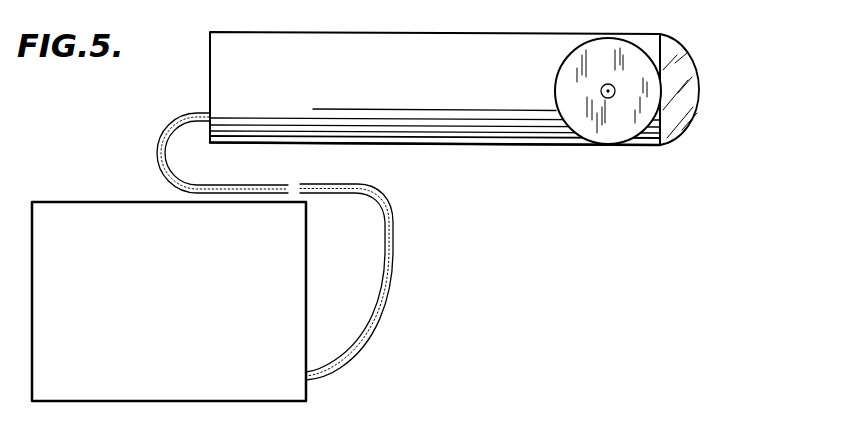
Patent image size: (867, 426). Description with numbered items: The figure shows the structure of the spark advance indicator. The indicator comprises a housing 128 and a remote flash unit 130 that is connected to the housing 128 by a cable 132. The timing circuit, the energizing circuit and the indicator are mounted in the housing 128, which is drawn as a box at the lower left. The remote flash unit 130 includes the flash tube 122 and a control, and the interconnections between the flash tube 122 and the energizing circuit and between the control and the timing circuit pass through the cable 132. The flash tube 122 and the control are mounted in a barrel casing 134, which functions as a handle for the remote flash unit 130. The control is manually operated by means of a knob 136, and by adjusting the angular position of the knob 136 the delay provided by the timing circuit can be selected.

The flash tube 122 is at (683, 127).
The housing 128 is at (300, 272).
The remote flash unit 130 is at (512, 15).
The cable 132 is at (394, 226).
The barrel casing 134 is at (478, 138).
The knob 136 is at (570, 80).